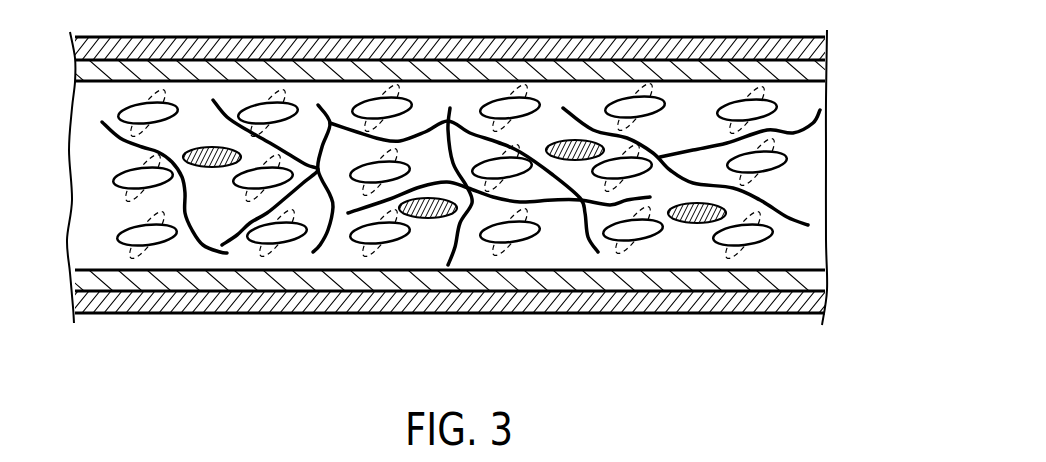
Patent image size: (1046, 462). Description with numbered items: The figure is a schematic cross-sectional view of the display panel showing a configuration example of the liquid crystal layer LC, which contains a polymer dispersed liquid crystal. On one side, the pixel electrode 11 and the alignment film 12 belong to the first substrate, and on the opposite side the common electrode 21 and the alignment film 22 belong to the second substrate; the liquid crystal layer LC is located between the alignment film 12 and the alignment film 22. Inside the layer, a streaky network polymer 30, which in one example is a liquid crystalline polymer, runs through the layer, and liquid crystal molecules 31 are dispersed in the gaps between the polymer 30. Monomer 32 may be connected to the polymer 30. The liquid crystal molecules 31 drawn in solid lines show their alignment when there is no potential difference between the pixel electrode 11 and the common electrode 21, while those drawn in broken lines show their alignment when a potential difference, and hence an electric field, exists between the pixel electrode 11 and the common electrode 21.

The pixel electrode 11 is at (815, 303).
The alignment film 12 is at (815, 282).
The common electrode 21 is at (822, 52).
The alignment film 22 is at (822, 72).
The liquid crystal layer LC is at (793, 195).
The polymer 30 is at (793, 133).
The liquid crystal molecules 31 is at (124, 173).
The monomer 32 is at (685, 223).